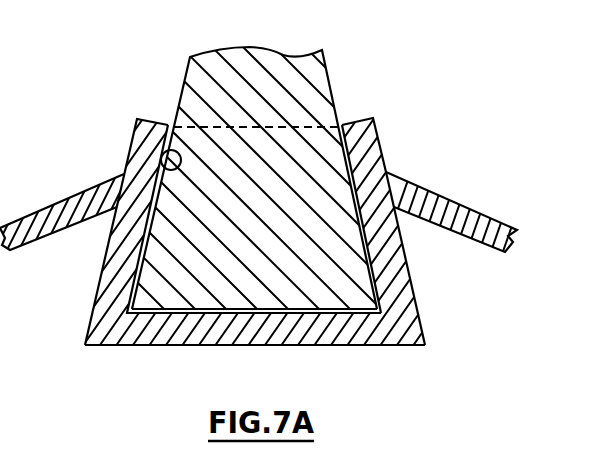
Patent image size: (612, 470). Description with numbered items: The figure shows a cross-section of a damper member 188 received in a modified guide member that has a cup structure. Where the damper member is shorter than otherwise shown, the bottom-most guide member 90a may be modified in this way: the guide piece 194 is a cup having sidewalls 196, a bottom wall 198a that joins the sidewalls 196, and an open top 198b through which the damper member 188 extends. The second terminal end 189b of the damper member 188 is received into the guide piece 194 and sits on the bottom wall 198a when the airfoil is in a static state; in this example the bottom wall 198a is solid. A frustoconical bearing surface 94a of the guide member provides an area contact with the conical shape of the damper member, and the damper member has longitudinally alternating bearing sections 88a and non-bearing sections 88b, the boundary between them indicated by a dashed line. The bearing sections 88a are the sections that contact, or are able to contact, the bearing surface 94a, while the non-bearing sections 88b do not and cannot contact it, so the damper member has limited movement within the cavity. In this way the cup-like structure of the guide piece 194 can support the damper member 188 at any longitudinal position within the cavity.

The damper member 188 is at (166, 72).
The bearing sections 88a is at (178, 182).
The non-bearing sections 88b is at (293, 84).
The bottom-most guide member 90a is at (484, 218).
The bearing surface 94a is at (166, 143).
The second terminal end 189b is at (273, 311).
The guide piece 194 is at (436, 320).
The sidewalls 196 is at (381, 138).
The bottom wall 198a is at (122, 346).
The open top 198b is at (344, 112).